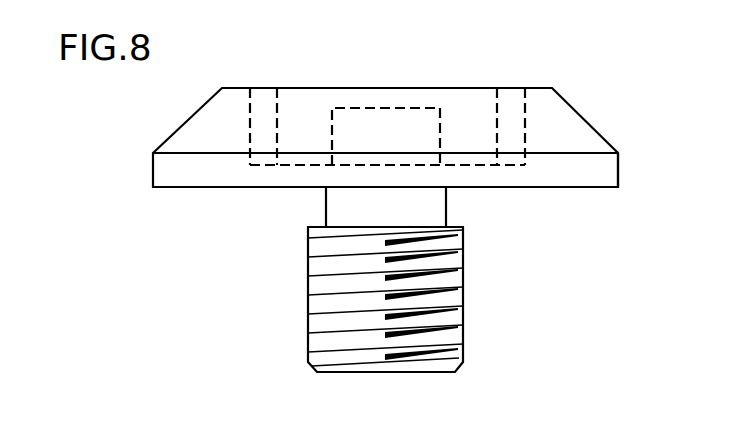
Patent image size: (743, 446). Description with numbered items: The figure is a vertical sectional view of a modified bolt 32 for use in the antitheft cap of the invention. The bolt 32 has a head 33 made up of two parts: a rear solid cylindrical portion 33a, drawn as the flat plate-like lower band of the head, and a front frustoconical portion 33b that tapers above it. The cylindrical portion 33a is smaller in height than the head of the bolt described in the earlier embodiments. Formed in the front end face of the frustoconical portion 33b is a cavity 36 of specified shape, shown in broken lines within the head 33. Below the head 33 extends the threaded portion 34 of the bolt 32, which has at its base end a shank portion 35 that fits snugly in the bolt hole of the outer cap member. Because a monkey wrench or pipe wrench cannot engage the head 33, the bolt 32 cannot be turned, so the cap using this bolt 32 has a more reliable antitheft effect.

The bolt 32 is at (662, 155).
The head 33 is at (603, 133).
The rear solid cylindrical portion 33a is at (602, 177).
The front frustoconical portion 33b is at (553, 113).
The threaded portion 34 is at (453, 307).
The shank portion 35 is at (433, 207).
The cavity 36 is at (428, 130).